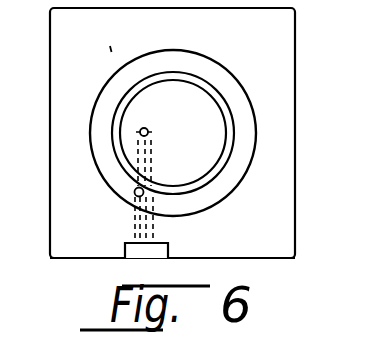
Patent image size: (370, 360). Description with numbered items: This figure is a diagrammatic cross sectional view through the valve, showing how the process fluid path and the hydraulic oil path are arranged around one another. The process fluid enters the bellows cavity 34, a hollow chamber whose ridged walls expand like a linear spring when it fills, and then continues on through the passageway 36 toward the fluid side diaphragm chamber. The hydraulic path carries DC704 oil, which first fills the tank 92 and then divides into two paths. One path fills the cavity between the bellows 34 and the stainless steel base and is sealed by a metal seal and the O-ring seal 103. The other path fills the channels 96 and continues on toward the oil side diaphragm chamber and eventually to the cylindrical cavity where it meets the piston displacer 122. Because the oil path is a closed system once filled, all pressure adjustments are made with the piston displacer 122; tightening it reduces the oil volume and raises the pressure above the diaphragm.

The bellows cavity 34 is at (213, 100).
The passageway 36 is at (150, 131).
The tank 92 is at (140, 132).
The channel 96 is at (134, 190).
The O-ring seal 103 is at (248, 170).
The piston displacer 122 is at (133, 226).